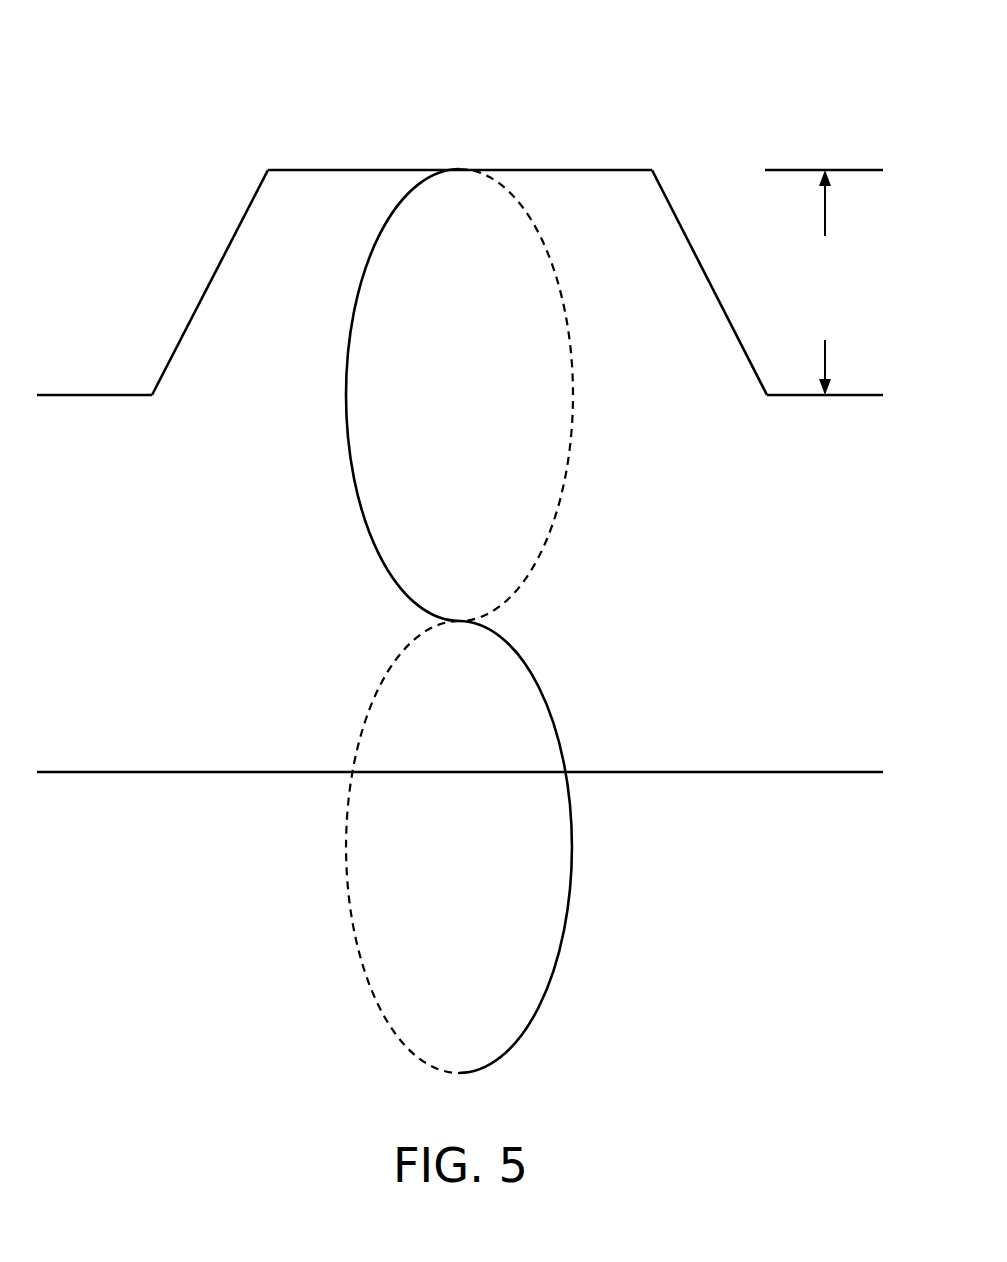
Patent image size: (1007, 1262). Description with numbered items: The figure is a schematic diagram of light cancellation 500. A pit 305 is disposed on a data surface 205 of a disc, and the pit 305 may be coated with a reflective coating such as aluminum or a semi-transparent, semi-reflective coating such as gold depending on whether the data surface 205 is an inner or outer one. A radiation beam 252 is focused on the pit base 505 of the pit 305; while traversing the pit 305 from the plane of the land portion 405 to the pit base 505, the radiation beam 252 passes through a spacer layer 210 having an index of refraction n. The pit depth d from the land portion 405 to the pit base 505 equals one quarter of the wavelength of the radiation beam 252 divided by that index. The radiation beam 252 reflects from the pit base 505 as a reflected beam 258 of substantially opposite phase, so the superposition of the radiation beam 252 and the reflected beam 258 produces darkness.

The light cancellation 500 is at (110, 57).
The data surface 205 is at (147, 395).
The spacer layer 210 is at (207, 772).
The radiation beam 252 is at (350, 320).
The reflected beam 258 is at (382, 683).
The pit 305 is at (247, 213).
The land portion 405 is at (832, 395).
The pit base 505 is at (360, 168).